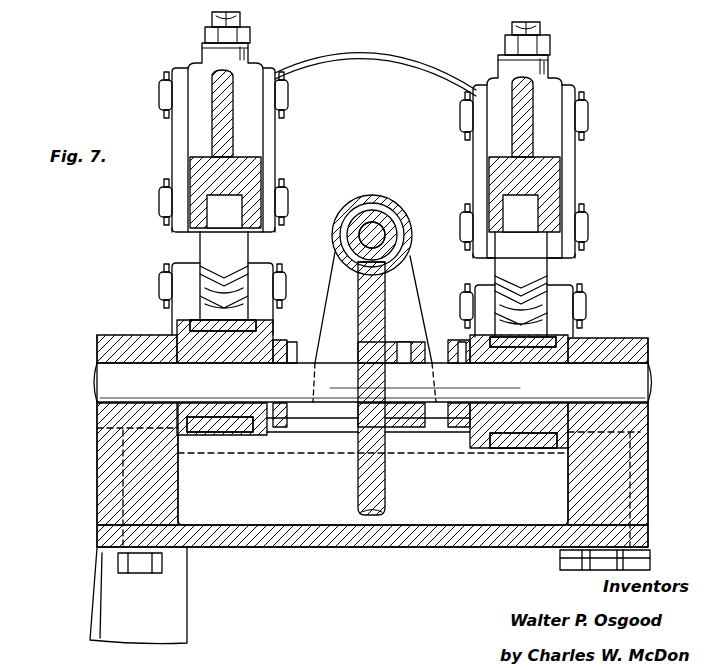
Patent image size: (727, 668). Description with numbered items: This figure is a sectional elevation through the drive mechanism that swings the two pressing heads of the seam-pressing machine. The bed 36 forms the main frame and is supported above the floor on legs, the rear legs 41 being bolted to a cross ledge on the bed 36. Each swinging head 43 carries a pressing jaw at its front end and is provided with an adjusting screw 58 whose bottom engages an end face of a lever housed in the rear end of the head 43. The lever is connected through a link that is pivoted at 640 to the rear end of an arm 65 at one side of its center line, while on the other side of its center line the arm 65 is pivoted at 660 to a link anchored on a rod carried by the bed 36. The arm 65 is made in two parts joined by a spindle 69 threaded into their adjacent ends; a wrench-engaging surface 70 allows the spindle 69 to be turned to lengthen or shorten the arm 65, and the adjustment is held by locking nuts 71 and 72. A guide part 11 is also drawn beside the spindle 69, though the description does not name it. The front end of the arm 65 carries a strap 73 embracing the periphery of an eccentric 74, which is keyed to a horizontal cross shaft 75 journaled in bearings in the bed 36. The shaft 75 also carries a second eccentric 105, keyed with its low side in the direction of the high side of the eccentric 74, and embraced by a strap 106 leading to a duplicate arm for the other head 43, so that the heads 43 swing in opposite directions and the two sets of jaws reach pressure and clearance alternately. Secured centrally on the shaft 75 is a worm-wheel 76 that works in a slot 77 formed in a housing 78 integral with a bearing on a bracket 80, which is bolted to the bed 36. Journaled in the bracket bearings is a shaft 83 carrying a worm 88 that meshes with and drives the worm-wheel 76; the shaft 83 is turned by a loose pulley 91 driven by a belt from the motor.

The adjusting screw 58 is at (242, 22).
The loose pulley 91 is at (373, 52).
The swinging head 43 is at (217, 113).
The arm 65 is at (184, 233).
The pivot 640 is at (290, 195).
The pivot 660 is at (293, 274).
The worm 88 is at (350, 202).
The shaft 83 is at (378, 222).
The housing 78 is at (405, 213).
The guide plate 11 is at (207, 270).
The spindle 69 is at (230, 277).
The wrench-engaging surface 70 is at (200, 290).
The locking nut 72 is at (200, 307).
The locking nut 71 is at (550, 272).
The slot 77 is at (388, 277).
The bracket 80 is at (408, 323).
The second eccentric 105 is at (177, 337).
The strap 106 is at (272, 328).
The strap 73 is at (550, 337).
The eccentric 74 is at (583, 345).
The cross shaft 75 is at (642, 385).
The worm-wheel 76 is at (373, 493).
The bed 36 is at (275, 538).
The rear leg 41 is at (160, 597).